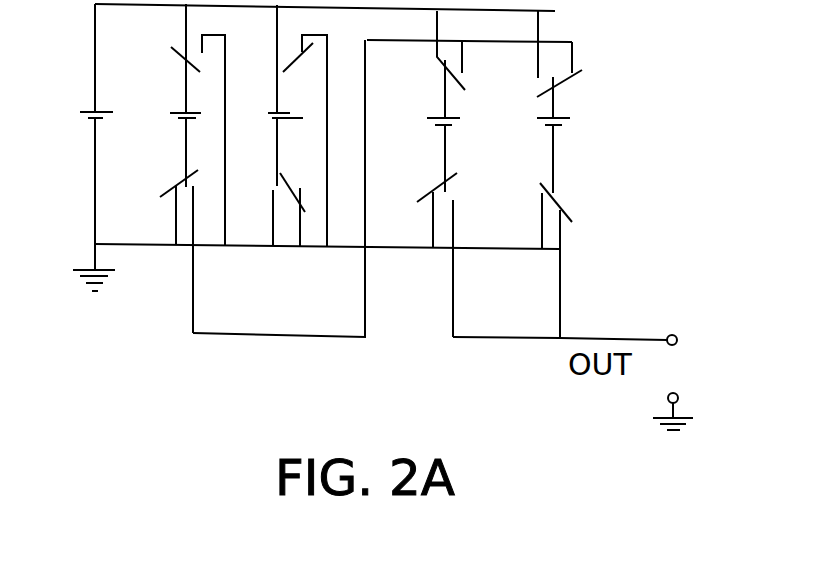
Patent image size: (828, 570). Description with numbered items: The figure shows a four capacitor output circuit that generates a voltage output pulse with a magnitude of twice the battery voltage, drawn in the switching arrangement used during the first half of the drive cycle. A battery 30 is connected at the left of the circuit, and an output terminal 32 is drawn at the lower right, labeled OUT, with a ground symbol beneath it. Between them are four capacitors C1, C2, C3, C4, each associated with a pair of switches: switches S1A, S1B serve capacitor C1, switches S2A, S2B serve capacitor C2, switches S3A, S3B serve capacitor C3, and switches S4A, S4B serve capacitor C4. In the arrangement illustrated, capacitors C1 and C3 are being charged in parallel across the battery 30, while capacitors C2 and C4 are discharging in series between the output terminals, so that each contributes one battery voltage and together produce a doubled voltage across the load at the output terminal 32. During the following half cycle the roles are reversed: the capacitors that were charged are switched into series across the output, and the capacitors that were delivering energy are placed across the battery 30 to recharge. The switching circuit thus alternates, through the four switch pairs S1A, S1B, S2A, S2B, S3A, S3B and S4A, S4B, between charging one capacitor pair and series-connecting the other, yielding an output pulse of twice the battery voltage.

The battery 30 is at (82, 112).
The output terminal 32 is at (590, 346).
The capacitor C1 is at (173, 95).
The capacitor C2 is at (273, 95).
The capacitor C3 is at (431, 126).
The capacitor C4 is at (536, 135).
The switch S1A is at (166, 136).
The switch S1B is at (156, 238).
The switch S2A is at (278, 140).
The switch S2B is at (266, 196).
The switch S3A is at (477, 50).
The switch S3B is at (419, 242).
The switch S4A is at (587, 54).
The switch S4B is at (527, 242).